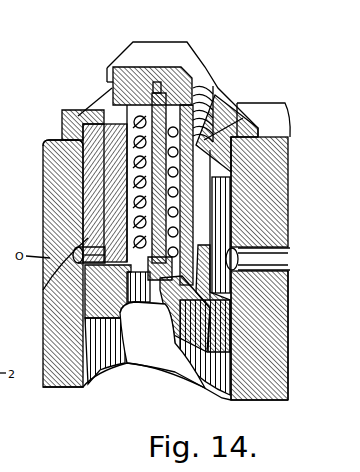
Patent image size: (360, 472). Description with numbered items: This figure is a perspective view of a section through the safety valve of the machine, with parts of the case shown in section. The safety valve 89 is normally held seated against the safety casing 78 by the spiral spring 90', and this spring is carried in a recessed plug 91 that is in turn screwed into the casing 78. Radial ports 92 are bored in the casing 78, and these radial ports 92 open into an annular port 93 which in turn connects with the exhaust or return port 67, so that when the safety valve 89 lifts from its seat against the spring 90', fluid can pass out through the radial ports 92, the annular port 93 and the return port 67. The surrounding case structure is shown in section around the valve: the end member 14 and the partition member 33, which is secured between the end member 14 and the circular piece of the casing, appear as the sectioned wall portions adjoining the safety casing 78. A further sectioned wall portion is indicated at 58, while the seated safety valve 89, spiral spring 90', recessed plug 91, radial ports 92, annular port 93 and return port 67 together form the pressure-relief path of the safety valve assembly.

The end member 14 is at (258, 212).
The partition member 33 is at (287, 307).
The outer wall member 58 is at (58, 204).
The exhaust or return port 67 is at (277, 258).
The safety casing 78 is at (44, 158).
The safety valve 89 is at (136, 307).
The spiral spring 90' is at (74, 114).
The recessed plug 91 is at (112, 90).
The radial ports 92 is at (78, 270).
The annular port 93 is at (85, 245).